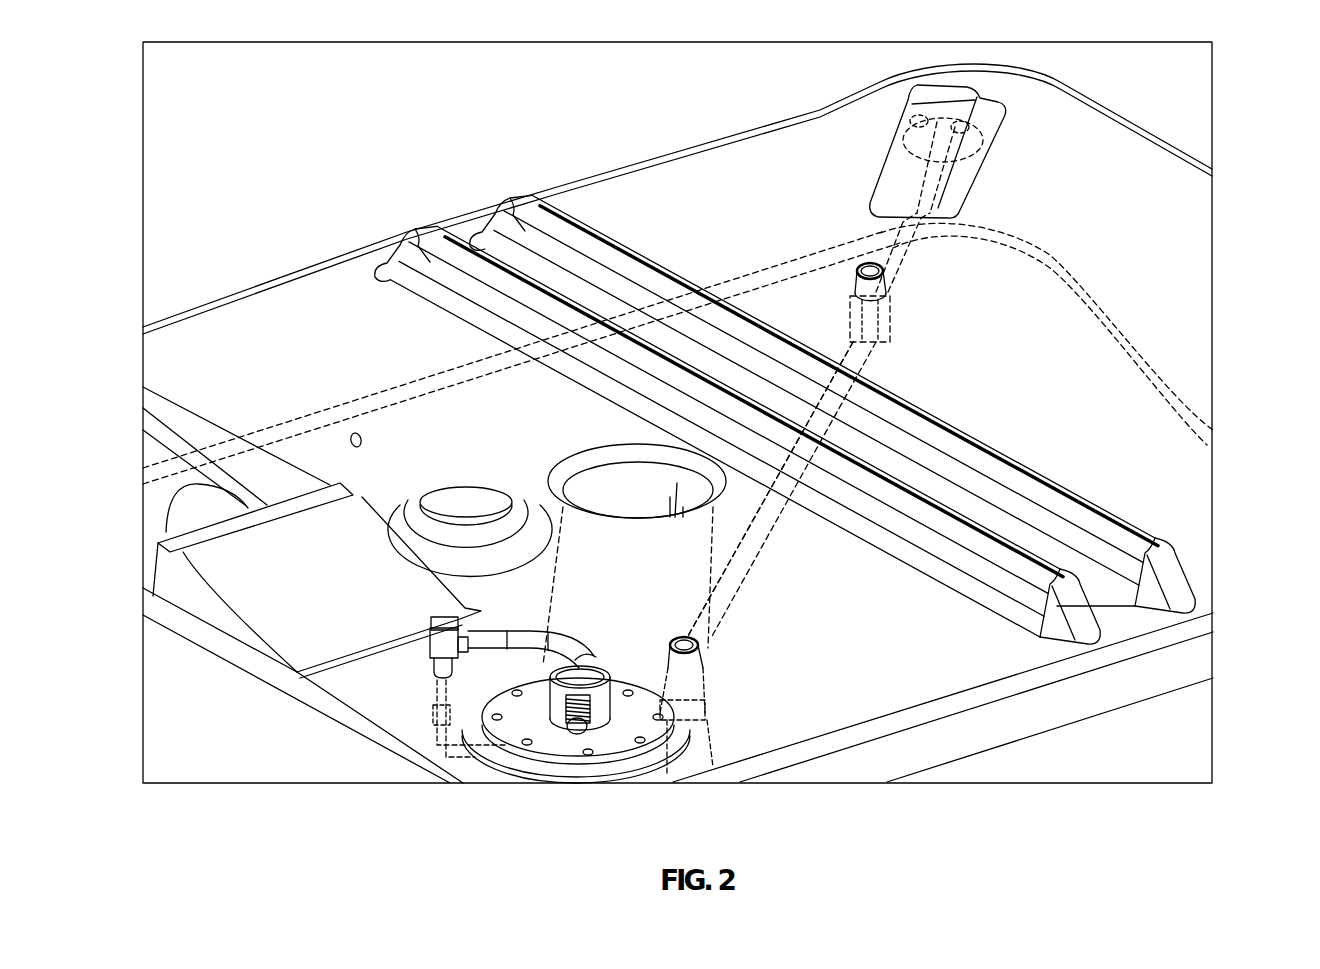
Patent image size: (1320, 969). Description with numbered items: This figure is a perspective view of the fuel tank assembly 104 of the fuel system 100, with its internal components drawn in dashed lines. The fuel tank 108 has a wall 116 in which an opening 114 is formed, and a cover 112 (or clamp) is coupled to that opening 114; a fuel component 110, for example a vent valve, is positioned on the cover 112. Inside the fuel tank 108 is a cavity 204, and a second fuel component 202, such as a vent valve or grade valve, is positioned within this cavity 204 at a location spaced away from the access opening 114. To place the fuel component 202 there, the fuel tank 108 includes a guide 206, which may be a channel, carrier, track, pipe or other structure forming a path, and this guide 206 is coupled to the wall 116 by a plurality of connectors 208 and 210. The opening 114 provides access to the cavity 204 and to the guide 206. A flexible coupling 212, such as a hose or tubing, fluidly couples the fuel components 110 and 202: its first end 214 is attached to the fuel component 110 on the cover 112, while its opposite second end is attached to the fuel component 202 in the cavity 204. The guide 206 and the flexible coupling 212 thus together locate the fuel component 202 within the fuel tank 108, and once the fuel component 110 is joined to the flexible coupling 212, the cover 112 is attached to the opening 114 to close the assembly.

The fuel system 100 is at (1122, 92).
The fuel tank assembly 104 is at (404, 198).
The fuel tank 108 is at (562, 187).
The fuel component 110 is at (604, 693).
The cover 112 is at (618, 741).
The opening 114 is at (538, 764).
The wall 116 is at (330, 313).
The fuel component 202 is at (985, 140).
The cavity 204 is at (1115, 422).
The guide 206 is at (843, 339).
The connector 208 is at (707, 640).
The connector 210 is at (857, 276).
The flexible coupling 212 is at (700, 700).
The first end 214 is at (700, 700).